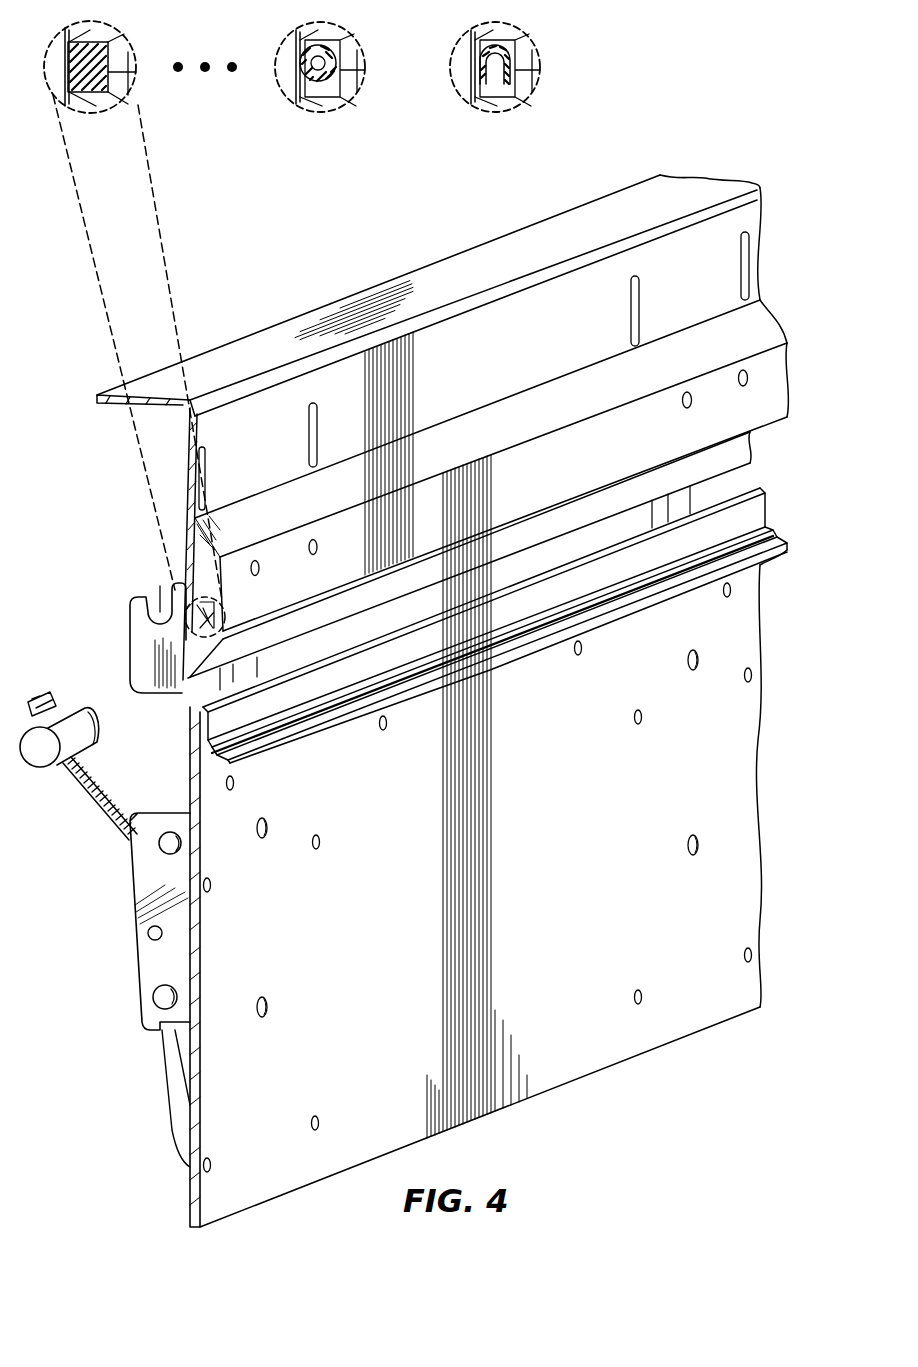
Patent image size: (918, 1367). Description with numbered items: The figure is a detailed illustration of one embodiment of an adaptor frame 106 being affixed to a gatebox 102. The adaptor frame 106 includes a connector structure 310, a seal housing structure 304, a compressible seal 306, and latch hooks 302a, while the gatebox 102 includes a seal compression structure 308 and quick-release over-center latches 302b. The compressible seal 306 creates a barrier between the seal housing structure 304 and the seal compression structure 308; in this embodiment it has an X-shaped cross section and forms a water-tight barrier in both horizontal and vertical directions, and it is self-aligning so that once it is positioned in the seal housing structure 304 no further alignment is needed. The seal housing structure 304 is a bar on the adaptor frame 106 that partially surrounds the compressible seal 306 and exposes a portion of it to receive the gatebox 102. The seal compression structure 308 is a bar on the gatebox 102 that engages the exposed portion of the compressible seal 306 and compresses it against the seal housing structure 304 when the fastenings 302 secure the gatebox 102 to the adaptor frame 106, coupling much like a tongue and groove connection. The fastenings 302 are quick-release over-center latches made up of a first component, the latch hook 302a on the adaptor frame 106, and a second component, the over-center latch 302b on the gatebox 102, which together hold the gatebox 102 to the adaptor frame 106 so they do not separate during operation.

The gatebox 102 is at (560, 1095).
The adaptor frame 106 is at (450, 250).
The fastenings 302 is at (121, 636).
The latch hook 302a is at (148, 600).
The over-center latch 302b is at (128, 868).
The seal housing structure 304 is at (290, 495).
The compressible seal 306 is at (132, 62).
The seal compression structure 308 is at (752, 508).
The connector structure 310 is at (580, 213).